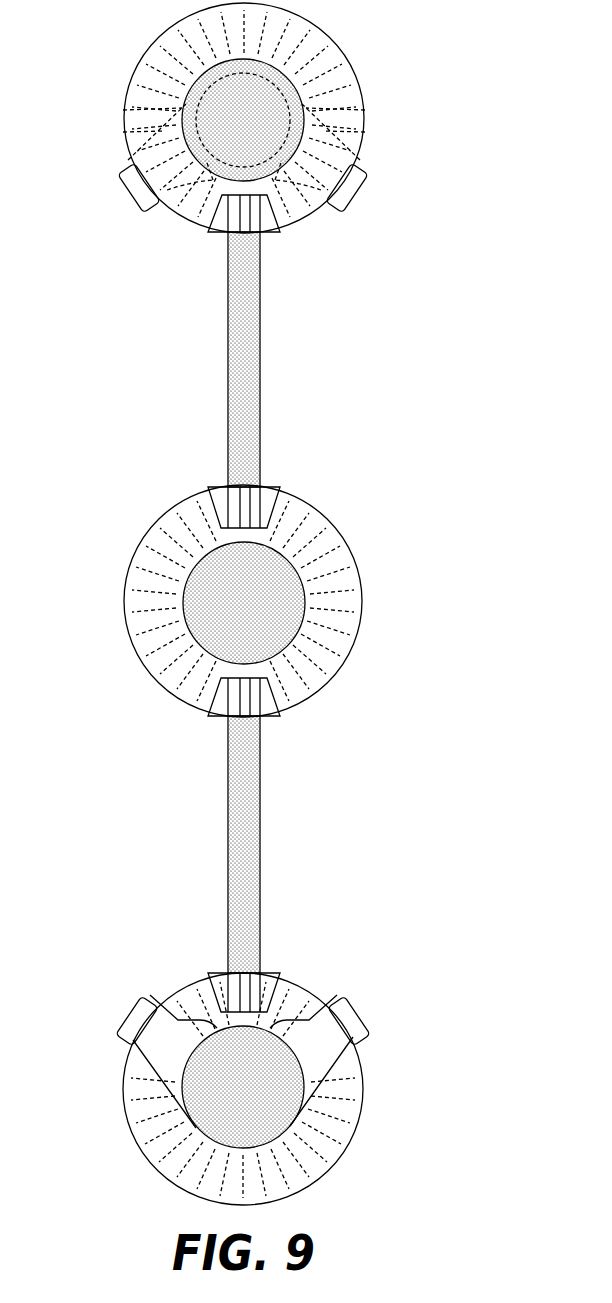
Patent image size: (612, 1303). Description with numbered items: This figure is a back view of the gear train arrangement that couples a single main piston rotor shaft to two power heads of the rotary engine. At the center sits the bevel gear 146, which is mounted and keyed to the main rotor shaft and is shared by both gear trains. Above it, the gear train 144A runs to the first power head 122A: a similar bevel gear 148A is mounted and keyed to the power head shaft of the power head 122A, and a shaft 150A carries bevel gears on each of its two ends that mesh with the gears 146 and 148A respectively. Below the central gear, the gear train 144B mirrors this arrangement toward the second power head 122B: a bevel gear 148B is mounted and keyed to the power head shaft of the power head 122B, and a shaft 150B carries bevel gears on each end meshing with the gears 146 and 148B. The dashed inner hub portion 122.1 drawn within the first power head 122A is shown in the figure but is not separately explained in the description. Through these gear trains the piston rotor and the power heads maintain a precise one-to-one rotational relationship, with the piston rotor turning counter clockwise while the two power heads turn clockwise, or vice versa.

The power head 122A is at (165, 148).
The inner hub portion 122.1 is at (340, 90).
The bevel gear 148A is at (293, 210).
The gear train 144A is at (218, 312).
The shaft 150A is at (233, 290).
The bevel gear 146 is at (167, 552).
The gear train 144B is at (200, 838).
The shaft 150B is at (248, 908).
The power head 122B is at (350, 1038).
The bevel gear 148B is at (313, 1127).